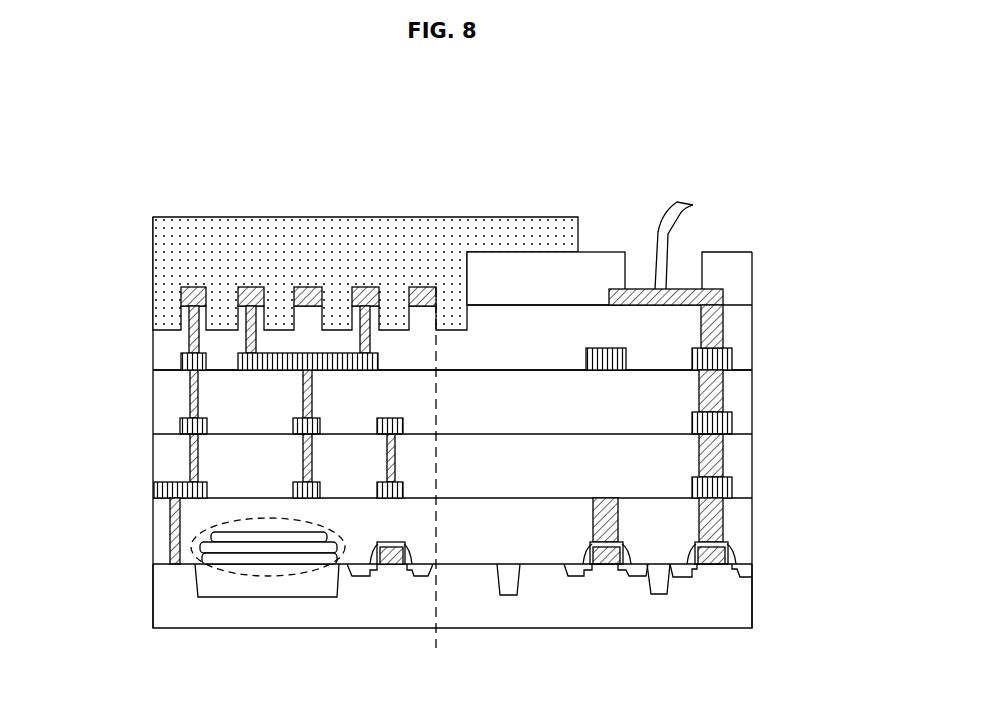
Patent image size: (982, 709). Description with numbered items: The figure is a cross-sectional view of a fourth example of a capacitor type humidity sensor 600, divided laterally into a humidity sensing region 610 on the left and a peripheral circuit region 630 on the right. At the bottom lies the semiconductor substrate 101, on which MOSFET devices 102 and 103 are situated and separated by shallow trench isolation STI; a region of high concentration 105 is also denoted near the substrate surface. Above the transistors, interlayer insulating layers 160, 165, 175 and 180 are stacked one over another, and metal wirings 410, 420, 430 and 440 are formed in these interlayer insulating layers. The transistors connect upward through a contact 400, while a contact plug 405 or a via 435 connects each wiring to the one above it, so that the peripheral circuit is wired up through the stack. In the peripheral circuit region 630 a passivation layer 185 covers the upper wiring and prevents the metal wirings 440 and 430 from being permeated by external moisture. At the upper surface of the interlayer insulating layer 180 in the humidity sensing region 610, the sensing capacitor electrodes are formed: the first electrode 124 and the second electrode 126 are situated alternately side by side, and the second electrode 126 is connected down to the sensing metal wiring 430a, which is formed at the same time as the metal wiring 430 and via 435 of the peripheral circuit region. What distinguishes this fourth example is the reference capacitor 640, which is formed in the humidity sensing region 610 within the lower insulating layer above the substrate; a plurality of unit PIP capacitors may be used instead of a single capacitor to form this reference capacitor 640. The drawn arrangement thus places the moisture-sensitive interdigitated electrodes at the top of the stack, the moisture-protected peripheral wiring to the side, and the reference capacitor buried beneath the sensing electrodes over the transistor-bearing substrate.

The capacitor type humidity sensor 600 is at (440, 100).
The humidity sensing region 610 is at (303, 150).
The peripheral circuit region 630 is at (641, 150).
The semiconductor substrate 101 is at (720, 598).
The MOSFET device 102 is at (606, 564).
The MOSFET device 103 is at (713, 564).
The shallow trench isolation STI is at (658, 590).
The region of a high concentration 105 is at (165, 570).
The first electrode 124 is at (185, 299).
The second electrode 126 is at (250, 287).
The interlayer insulating layer 160 is at (166, 534).
The interlayer insulating layer 165 is at (178, 471).
The interlayer insulating layer 175 is at (183, 411).
The interlayer insulating layer 180 is at (534, 342).
The passivation layer 185 is at (593, 287).
The contact 400 is at (716, 553).
The contact plug 405 is at (718, 517).
The metal wiring 410 is at (732, 488).
The metal wiring 420 is at (732, 423).
The metal wiring 430 is at (732, 358).
The sensing metal wiring 430a is at (182, 362).
The via 435 is at (722, 325).
The metal wiring 440 is at (722, 293).
The reference capacitor 640 is at (269, 577).